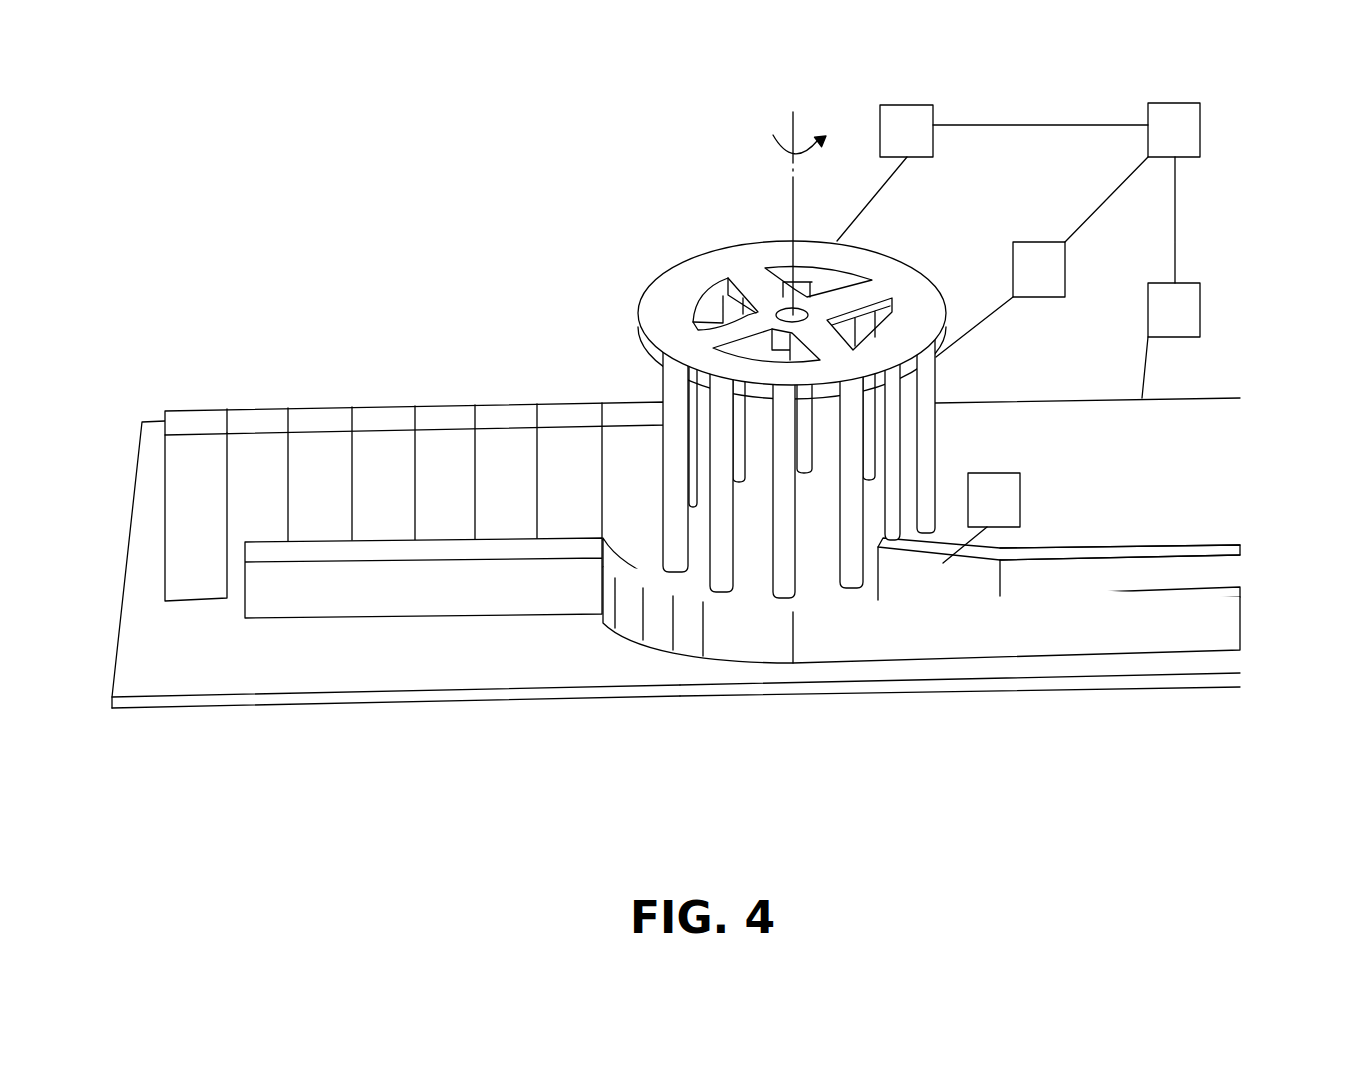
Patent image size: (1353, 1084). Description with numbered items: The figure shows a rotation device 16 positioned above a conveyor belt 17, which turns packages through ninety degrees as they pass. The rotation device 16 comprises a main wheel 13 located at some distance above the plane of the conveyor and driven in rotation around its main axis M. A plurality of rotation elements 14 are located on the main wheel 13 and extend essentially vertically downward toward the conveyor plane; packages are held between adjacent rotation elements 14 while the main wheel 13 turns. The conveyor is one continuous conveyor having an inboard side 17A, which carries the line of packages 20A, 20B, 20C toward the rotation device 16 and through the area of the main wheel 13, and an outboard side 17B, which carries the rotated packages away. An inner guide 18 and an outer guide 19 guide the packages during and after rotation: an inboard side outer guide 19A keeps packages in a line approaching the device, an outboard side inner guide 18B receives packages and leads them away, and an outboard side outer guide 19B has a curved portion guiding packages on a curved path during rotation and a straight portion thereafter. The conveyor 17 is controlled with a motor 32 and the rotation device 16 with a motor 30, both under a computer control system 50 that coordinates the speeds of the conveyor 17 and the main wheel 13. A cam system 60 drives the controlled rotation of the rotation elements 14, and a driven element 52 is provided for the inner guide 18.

The main wheel 13 is at (880, 256).
The rotation elements 14 is at (935, 385).
The rotation device 16 is at (593, 210).
The conveyor belt 17 is at (676, 591).
The inboard side 17A is at (487, 672).
The outboard side 17B is at (1185, 663).
The inner guide 18 is at (1059, 548).
The outboard side inner guide 18B is at (1155, 568).
The outer guide 19 is at (742, 647).
The inboard side outer guide 19A is at (287, 600).
The outboard side outer guide 19B is at (830, 647).
The package 20A is at (623, 440).
The package 20B is at (565, 525).
The package 20C is at (495, 427).
The motor 30 is at (908, 110).
The motor 32 is at (1193, 317).
The computer control system 50 is at (1193, 138).
The driven element 52 is at (997, 485).
The cam system 60 is at (1037, 253).
The main axis M is at (799, 201).